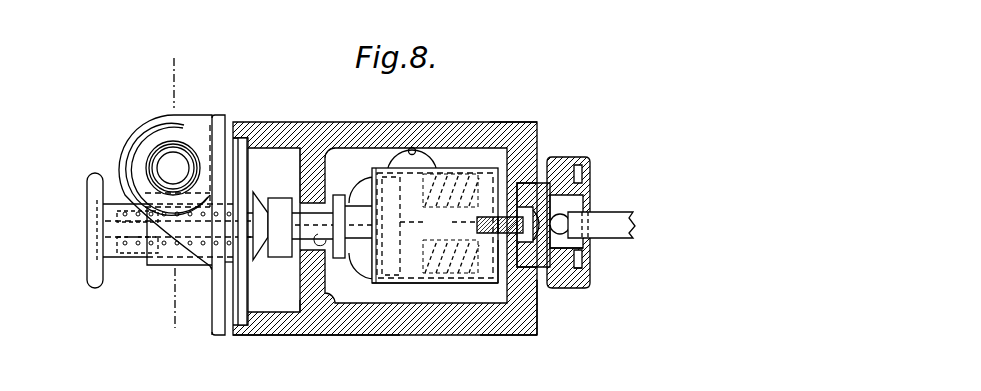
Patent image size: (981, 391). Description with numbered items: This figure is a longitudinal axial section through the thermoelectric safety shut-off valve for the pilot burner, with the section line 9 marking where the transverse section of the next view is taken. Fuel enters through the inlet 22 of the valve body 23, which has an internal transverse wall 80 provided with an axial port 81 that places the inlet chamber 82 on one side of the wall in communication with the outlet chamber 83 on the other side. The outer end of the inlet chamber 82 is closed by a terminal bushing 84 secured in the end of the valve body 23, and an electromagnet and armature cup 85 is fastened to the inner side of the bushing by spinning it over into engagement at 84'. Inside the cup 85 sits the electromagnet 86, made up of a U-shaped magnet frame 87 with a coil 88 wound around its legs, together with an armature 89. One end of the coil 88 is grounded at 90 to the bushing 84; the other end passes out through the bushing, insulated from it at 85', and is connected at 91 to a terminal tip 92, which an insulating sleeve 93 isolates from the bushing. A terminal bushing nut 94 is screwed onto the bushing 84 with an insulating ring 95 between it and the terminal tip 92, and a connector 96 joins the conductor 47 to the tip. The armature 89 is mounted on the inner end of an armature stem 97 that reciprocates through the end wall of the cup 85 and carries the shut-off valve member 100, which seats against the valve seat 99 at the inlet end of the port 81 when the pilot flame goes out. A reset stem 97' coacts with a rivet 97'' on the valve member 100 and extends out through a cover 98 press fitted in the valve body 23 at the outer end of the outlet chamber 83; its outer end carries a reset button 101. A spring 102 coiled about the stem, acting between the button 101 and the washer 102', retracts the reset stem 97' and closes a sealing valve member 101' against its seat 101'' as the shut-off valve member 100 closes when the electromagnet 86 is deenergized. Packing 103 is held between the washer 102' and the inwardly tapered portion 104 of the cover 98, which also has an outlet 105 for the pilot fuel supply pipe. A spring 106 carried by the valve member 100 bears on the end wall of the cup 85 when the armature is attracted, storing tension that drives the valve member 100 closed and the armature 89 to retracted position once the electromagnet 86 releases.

The section line 9- 9 is at (196, 69).
The inlet 22 is at (430, 168).
The valve body 23 is at (336, 336).
The conductor 47 is at (585, 244).
The internal transverse wall 80 is at (331, 150).
The axial port 81 is at (306, 148).
The inlet chamber 82 is at (403, 300).
The outlet chamber 83 is at (260, 150).
The terminal bushing 84 is at (554, 307).
The spun-over engagement 84' is at (473, 305).
The electromagnet and armature cup 85 is at (435, 318).
The insulation 85' is at (548, 195).
The electromagnet 86 is at (476, 168).
The U-shaped magnet frame 87 is at (506, 122).
The coil 88 is at (448, 172).
The armature 89 is at (373, 304).
The ground connection 90 is at (512, 222).
The coil connection 91 is at (602, 170).
The terminal tip 92 is at (590, 262).
The insulating sleeve 93 is at (492, 330).
The terminal bushing nut 94 is at (556, 166).
The insulating ring 95 is at (590, 275).
The connector 96 is at (580, 212).
The armature stem 97 is at (240, 190).
The reset stem 97' is at (322, 256).
The rivet 97'' is at (295, 329).
The cover 98 is at (215, 320).
The valve seat 99 is at (339, 195).
The shut-off valve member 100 is at (372, 180).
The reset button 101 is at (65, 237).
The sealing valve member 101' is at (280, 217).
The seat 101'' is at (252, 253).
The spring 102 is at (160, 260).
The washer 102' is at (252, 116).
The packing 103 is at (231, 262).
The inwardly tapered portion 104 is at (264, 210).
The outlet 105 is at (147, 142).
The spring 106 is at (365, 262).